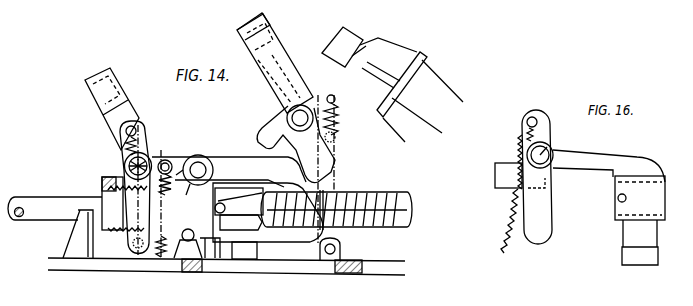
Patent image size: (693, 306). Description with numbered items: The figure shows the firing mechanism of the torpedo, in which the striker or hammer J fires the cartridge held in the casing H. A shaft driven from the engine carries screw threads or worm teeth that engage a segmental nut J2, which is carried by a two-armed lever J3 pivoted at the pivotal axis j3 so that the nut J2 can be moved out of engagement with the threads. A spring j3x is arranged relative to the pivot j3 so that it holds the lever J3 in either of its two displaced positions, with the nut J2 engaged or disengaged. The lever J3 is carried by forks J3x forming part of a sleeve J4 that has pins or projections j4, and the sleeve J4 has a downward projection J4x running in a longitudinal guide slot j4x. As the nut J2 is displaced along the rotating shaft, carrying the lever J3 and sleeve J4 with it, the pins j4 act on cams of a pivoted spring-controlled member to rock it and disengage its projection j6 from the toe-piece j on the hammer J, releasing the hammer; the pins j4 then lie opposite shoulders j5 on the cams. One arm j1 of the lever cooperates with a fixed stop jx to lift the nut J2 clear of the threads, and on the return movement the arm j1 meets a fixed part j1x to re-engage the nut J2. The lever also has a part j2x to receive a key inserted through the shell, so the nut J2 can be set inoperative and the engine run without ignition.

In FIG. 14, the arm of two-armed lever j1 is at (43, 208).
In FIG. 16, the arm of two-armed lever j1 is at (545, 215).
In FIG. 14, the fixed part j1x is at (80, 240).
In FIG. 14, the segmental nut J2 is at (105, 180).
In FIG. 16, the segmental nut J2 is at (503, 170).
In FIG. 14, the pivotal axis of lever j3 is at (141, 148).
In FIG. 16, the pivotal axis of lever j3 is at (553, 148).
In FIG. 14, the two-armed lever J3 is at (229, 175).
In FIG. 16, the two-armed lever J3 is at (573, 150).
In FIG. 14, the spring of lever j3x is at (120, 147).
In FIG. 16, the spring of lever j3x is at (537, 125).
In FIG. 16, the forks J3x is at (608, 163).
In FIG. 14, the key-receiving part of lever j2x is at (113, 110).
In FIG. 14, the toe-piece j is at (282, 25).
In FIG. 14, the projection j6 is at (312, 170).
In FIG. 14, the fixed stop jx is at (404, 204).
In FIG. 14, the pins or projections j4 is at (197, 240).
In FIG. 16, the pins or projections j4 is at (618, 198).
In FIG. 16, the sleeve J4 is at (640, 220).
In FIG. 14, the longitudinal guide slot j4x is at (250, 253).
In FIG. 16, the downward projection of sleeve J4x is at (637, 235).
In FIG. 14, the shoulders on cams j5 is at (240, 235).
In FIG. 14, the striker or hammer J is at (360, 53).
In FIG. 14, the casing H is at (420, 97).